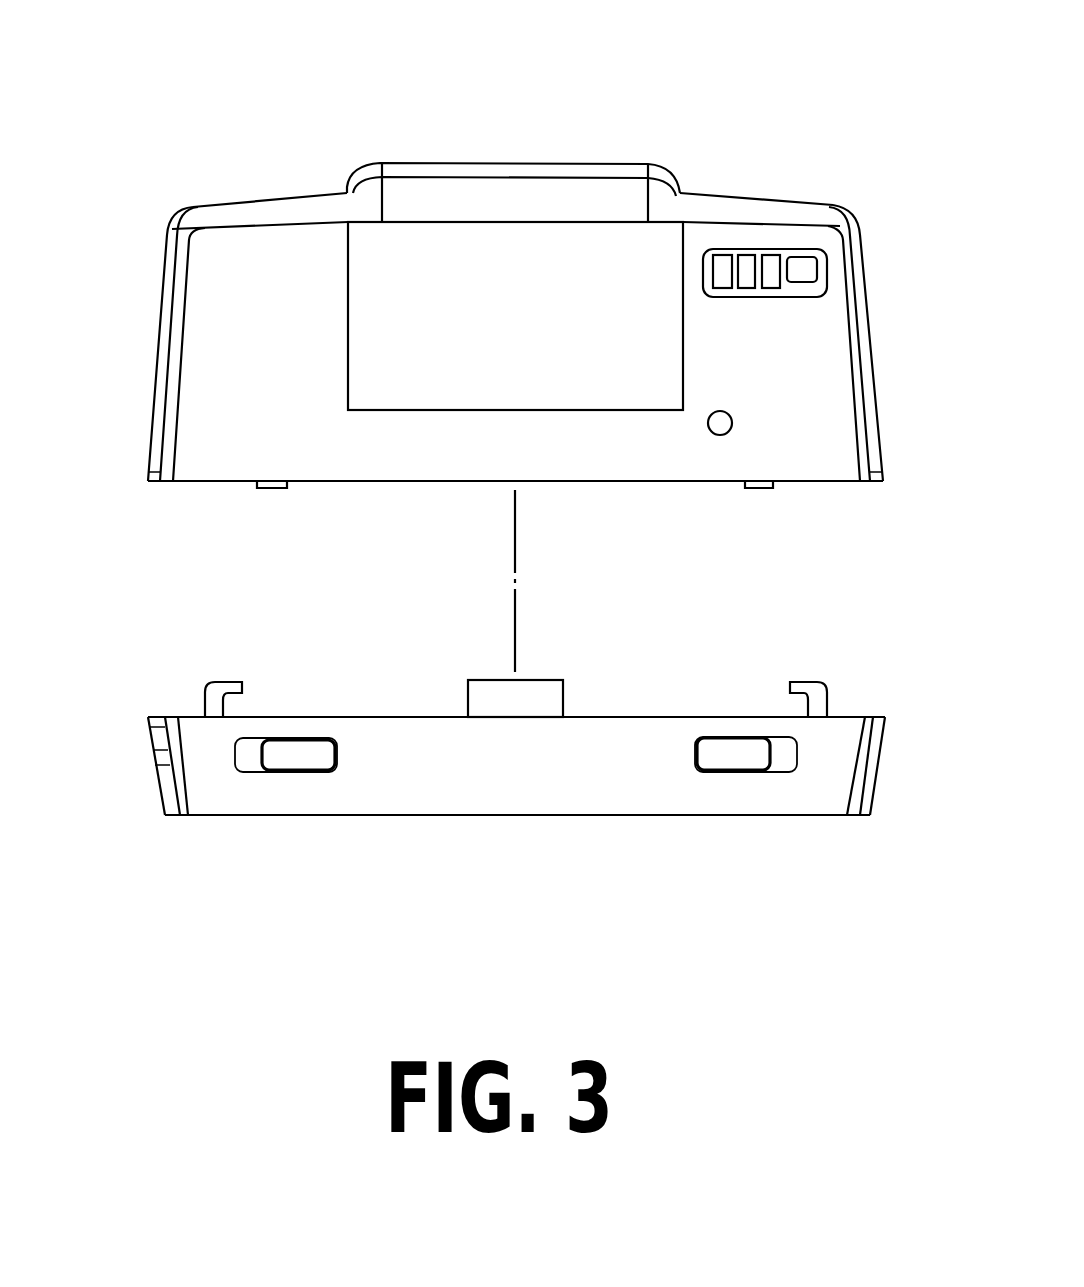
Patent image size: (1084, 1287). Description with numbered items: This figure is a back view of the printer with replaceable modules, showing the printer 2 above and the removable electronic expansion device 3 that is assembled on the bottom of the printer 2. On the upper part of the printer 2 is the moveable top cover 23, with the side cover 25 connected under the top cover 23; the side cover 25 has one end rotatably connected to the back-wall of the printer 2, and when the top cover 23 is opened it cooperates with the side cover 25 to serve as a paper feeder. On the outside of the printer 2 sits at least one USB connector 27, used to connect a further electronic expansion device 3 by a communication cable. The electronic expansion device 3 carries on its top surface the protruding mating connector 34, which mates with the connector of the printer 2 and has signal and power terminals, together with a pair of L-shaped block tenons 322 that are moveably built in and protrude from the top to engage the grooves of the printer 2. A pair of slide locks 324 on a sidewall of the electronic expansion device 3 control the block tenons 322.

The printer 2 is at (172, 183).
The top cover 23 is at (507, 163).
The side cover 25 is at (397, 283).
The USB connector 27 is at (802, 253).
The electronic expansion device 3 is at (520, 803).
The mating connector 34 is at (565, 697).
The block tenon 322 is at (232, 682).
The slide lock 324 is at (297, 762).